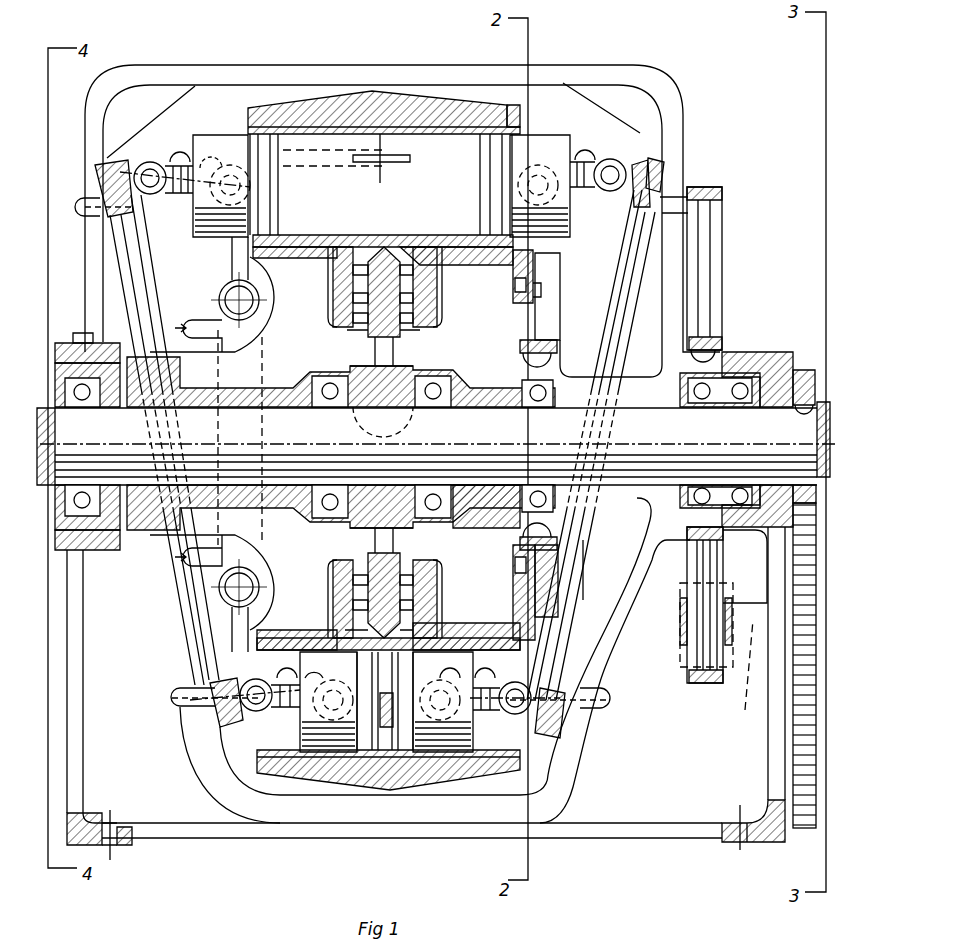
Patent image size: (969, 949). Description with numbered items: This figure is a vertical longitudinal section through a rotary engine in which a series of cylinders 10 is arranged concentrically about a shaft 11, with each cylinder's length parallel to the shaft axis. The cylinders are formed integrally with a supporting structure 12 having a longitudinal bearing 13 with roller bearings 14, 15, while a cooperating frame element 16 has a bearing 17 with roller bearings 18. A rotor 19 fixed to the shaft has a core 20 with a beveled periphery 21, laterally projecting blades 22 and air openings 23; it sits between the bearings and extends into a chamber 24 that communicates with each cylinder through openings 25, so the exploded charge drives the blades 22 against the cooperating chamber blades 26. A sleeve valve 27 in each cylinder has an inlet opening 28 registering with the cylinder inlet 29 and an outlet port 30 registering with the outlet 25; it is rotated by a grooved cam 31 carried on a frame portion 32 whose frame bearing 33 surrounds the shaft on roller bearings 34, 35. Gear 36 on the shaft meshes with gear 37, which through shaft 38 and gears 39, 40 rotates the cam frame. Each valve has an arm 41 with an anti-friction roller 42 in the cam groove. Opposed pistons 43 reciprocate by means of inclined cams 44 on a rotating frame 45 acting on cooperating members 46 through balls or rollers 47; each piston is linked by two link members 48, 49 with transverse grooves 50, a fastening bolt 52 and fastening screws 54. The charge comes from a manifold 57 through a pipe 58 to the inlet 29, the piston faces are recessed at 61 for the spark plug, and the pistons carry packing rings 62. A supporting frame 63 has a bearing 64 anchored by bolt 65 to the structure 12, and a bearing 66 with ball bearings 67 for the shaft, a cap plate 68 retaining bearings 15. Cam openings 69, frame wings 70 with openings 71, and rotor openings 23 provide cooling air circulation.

The cylinders 10 is at (420, 110).
The shaft 11 is at (468, 423).
The supporting structure 12 is at (173, 357).
The longitudinal bearing 13 is at (272, 407).
The roller bearings 14 is at (322, 376).
The roller bearings 15 is at (62, 386).
The frame element 16 is at (496, 265).
The bearing 17 is at (500, 502).
The roller bearings 18 is at (436, 376).
The rotor 19 is at (360, 404).
The core 20 is at (356, 281).
The beveled periphery 21 is at (386, 245).
The blades 22 is at (415, 286).
The openings 23 is at (388, 349).
The chamber 24 is at (410, 258).
The openings 25 is at (357, 640).
The blades 26 is at (354, 268).
The valve 27 is at (468, 136).
The inlet opening 28 is at (410, 158).
The inlet 29 is at (382, 160).
The outlet port 30 is at (367, 645).
The cam 31 is at (541, 296).
The frame portion 32 is at (570, 352).
The frame bearing 33 is at (640, 380).
The roller bearings 34 is at (540, 408).
The roller bearings 35 is at (700, 408).
The gear 36 is at (801, 370).
The gear 37 is at (800, 748).
The shaft 38 is at (738, 672).
The gear 39 is at (683, 634).
The gear 40 is at (720, 292).
The arm 41 is at (527, 264).
The anti-friction roller 42 is at (534, 282).
The pistons 43 is at (228, 140).
The cams 44 is at (118, 240).
The frame 45 is at (497, 58).
The coöperating member 46 is at (150, 263).
The anti-friction balls or rollers 47 is at (116, 176).
The link member 48 is at (180, 157).
The link member 49 is at (180, 200).
The transverse grooves 50 is at (152, 162).
The fastening pin or bolt 52 is at (147, 130).
The fastening screws 54 is at (182, 150).
The manifold 57 is at (226, 290).
The pipe 58 is at (232, 250).
The recesses 61 is at (283, 172).
The packing rings 62 is at (512, 127).
The supporting frame 63 is at (133, 830).
The bearing 64 is at (107, 552).
The anchoring bolt 65 is at (105, 343).
The bearing 66 is at (752, 352).
The ball bearings 67 is at (743, 528).
The cap plate 68 is at (60, 681).
The openings 69 is at (546, 332).
The wings 70 is at (138, 133).
The openings 71 is at (673, 263).